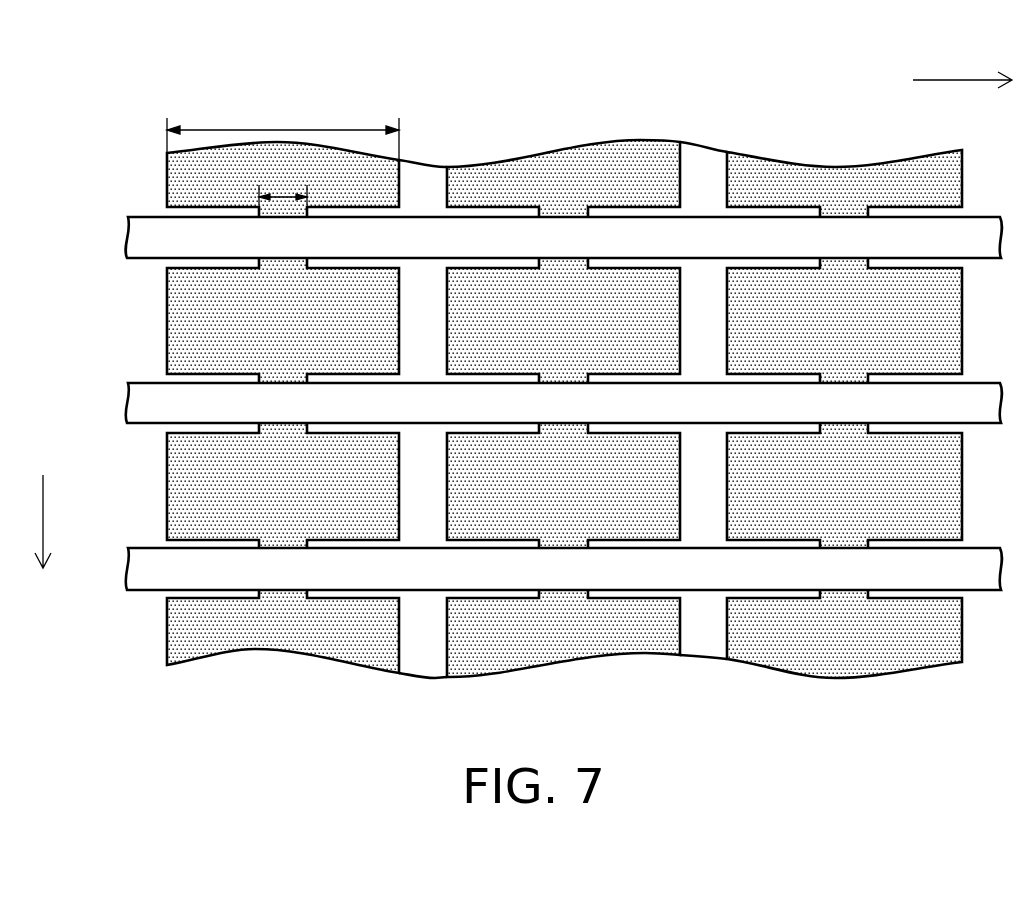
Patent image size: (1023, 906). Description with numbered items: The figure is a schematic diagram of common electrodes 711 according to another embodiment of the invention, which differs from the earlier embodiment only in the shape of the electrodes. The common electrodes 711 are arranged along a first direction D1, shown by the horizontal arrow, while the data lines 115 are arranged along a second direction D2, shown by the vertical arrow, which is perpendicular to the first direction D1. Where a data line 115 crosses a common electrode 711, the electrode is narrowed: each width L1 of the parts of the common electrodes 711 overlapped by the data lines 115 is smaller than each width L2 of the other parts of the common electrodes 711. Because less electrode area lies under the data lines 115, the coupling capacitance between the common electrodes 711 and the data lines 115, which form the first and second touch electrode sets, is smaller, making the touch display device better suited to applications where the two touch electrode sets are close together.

The common electrodes 711 is at (768, 177).
The data lines 115 is at (140, 397).
The width of overlapped part of common electrode L1 is at (283, 178).
The width of other part of common electrode L2 is at (283, 127).
The first direction D1 is at (962, 64).
The second direction D2 is at (61, 521).